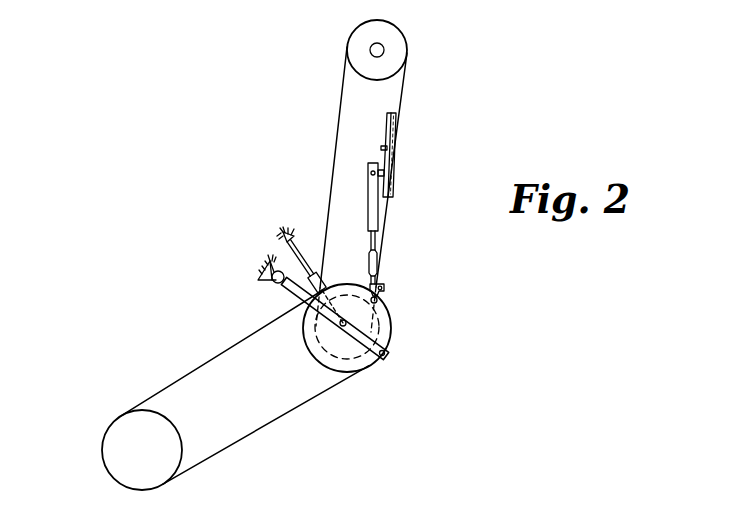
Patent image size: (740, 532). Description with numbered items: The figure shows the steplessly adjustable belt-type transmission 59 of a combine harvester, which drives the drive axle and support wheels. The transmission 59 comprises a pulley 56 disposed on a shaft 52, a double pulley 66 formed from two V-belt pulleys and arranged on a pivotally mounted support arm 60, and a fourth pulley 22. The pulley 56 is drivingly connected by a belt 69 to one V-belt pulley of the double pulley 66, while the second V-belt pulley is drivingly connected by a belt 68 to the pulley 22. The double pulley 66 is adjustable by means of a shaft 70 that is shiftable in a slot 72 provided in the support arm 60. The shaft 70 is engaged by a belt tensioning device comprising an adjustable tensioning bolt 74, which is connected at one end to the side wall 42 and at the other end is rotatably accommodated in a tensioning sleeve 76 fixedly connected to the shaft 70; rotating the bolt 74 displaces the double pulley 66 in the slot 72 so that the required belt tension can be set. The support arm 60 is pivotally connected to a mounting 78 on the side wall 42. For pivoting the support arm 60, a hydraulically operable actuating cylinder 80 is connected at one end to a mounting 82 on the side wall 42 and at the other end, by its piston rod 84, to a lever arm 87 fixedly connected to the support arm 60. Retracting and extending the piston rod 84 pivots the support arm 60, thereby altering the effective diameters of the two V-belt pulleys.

The pulley 22 is at (113, 424).
The side wall 42 is at (154, 285).
The shaft 52 is at (370, 46).
The pulley 56 is at (402, 33).
The belt-type transmission 59 is at (303, 116).
The support arm 60 is at (279, 292).
The double pulley 66 is at (363, 386).
The belt 68 is at (207, 362).
The belt 69 is at (341, 93).
The shaft 70 is at (320, 361).
The slot 72 is at (389, 343).
The tensioning bolt 74 is at (304, 242).
The tensioning sleeve 76 is at (317, 273).
The mounting 78 is at (103, 195).
The actuating cylinder 80 is at (380, 236).
The mounting 82 is at (392, 151).
The piston rod 84 is at (378, 261).
The lever arm 87 is at (365, 323).